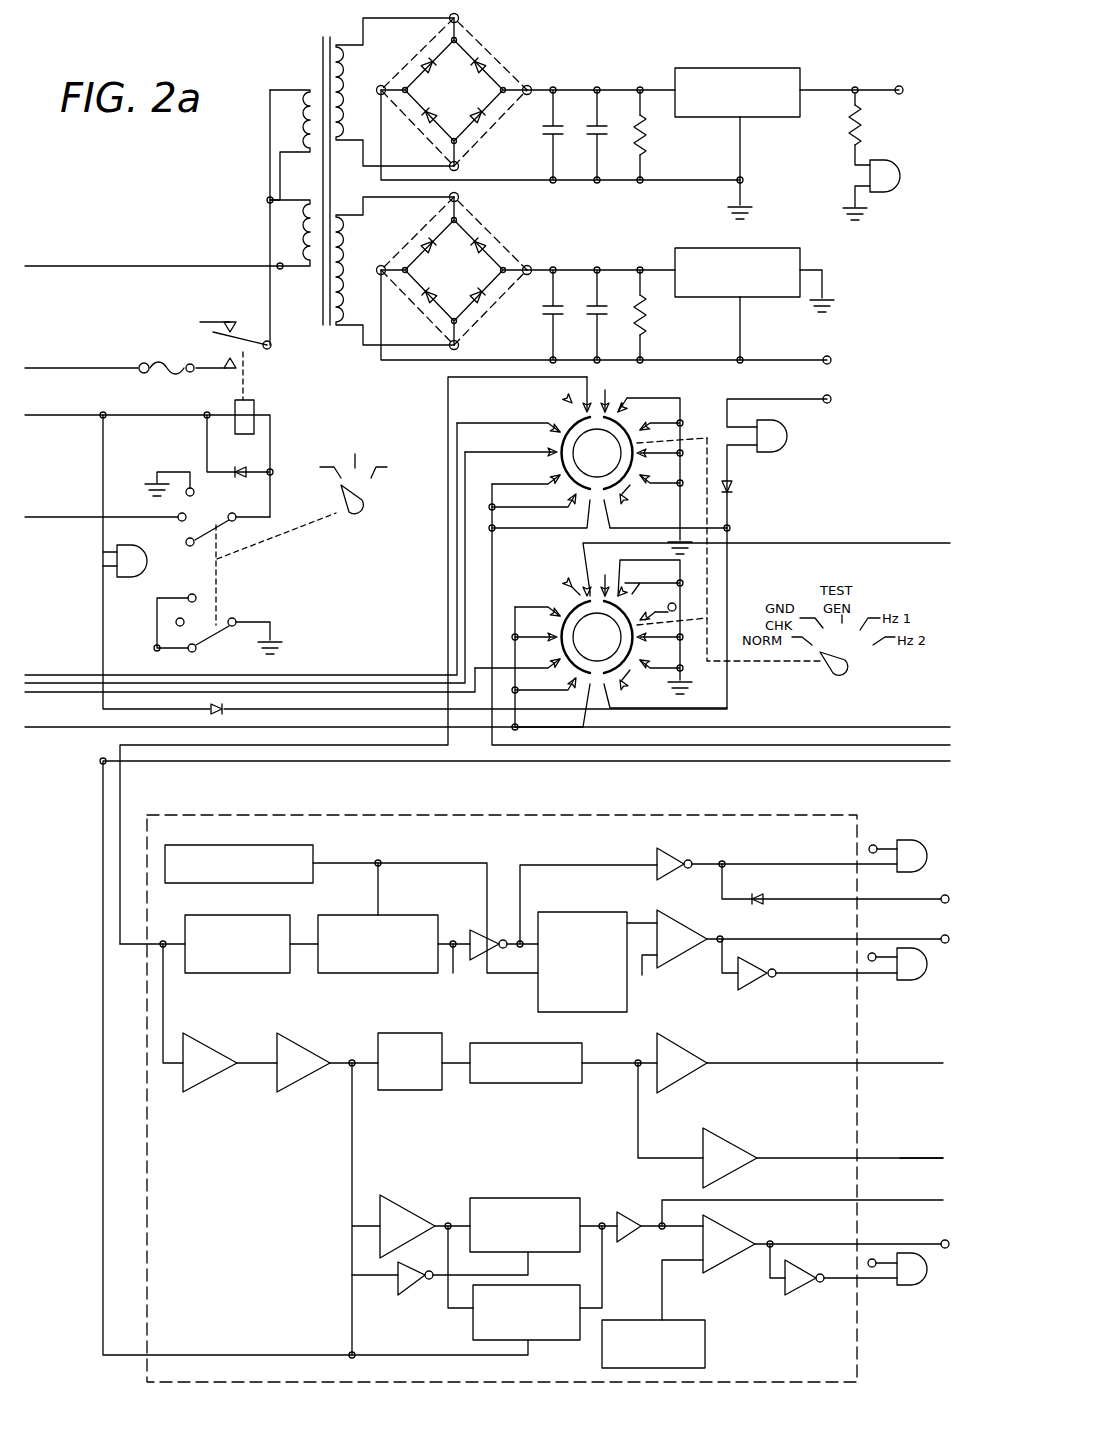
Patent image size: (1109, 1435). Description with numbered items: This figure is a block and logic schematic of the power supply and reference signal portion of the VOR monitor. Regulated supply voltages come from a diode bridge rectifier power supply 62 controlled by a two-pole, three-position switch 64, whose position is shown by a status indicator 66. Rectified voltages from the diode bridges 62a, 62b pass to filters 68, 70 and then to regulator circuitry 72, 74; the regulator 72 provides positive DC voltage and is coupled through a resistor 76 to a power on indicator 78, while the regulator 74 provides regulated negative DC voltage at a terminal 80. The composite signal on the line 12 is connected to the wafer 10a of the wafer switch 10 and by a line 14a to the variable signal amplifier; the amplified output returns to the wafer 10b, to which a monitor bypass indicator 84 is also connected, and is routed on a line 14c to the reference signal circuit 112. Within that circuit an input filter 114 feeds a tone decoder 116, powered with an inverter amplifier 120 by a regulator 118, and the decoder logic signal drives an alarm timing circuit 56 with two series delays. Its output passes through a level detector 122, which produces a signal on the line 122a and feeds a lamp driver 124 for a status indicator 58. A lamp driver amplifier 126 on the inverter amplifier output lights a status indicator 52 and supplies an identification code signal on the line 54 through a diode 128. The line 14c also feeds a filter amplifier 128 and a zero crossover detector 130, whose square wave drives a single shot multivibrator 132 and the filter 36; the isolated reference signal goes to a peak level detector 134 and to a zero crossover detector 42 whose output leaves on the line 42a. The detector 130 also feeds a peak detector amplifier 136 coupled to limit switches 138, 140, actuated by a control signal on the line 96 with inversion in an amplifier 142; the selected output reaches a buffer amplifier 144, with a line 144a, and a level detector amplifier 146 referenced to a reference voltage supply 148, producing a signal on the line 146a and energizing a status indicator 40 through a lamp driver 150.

The wafer switch 10 is at (593, 553).
The wafer 10a is at (548, 565).
The wafer 10b is at (593, 465).
The line 12 is at (96, 729).
The line 14a is at (810, 542).
The line 14c is at (122, 797).
The 30 Hz filter 36 is at (533, 1047).
The status indicator 40 is at (905, 1273).
The 30 Hz zero crossover detector 42 is at (722, 1148).
The line 42a is at (865, 1157).
The status indicator 52 is at (910, 847).
The line 54 is at (900, 898).
The alarm timing circuit 56 is at (573, 918).
The status indicator 58 is at (910, 977).
The diode bridge rectifier power supply 62 is at (452, 182).
The diode bridge 62a is at (454, 92).
The diode bridge 62b is at (454, 271).
The two-pole, three-position switch 64 is at (294, 585).
The status indicator 66 is at (147, 559).
The filter 68 is at (608, 82).
The filter 70 is at (608, 244).
The regulator circuitry 72 is at (730, 72).
The regulator circuitry 74 is at (739, 257).
The resistor 76 is at (860, 138).
The power on indicator 78 is at (890, 188).
The terminal 80 is at (831, 353).
The monitor bypass indicator 84 is at (790, 440).
The line 96 is at (570, 768).
The reference signal circuit 112 is at (612, 812).
The input filter 114 is at (240, 917).
The decoder 116 is at (390, 920).
The regulator 118 is at (275, 850).
The inverter amplifier 120 is at (473, 938).
The level detector 122 is at (672, 930).
The line 122a is at (750, 940).
The lamp driver 124 is at (748, 990).
The lamp driver amplifier 126 is at (670, 848).
The diode / filter amplifier 128 is at (198, 1052).
The zero crossover detector 130 is at (302, 1048).
The single shot multivibrator 132 is at (410, 1043).
The peak level detector 134 is at (673, 1060).
The 9960 Hz peak detector amplifier 136 is at (393, 1213).
The limit switch 138 is at (512, 1200).
The limit switch 140 is at (530, 1287).
The amplifier 142 is at (410, 1282).
The buffer amplifier 144 is at (637, 1212).
The line 144a is at (860, 1199).
The 9960 Hz level detector amplifier 146 is at (723, 1235).
The line 146a is at (868, 1243).
The reference voltage supply 148 is at (705, 1332).
The lamp driver 150 is at (797, 1295).